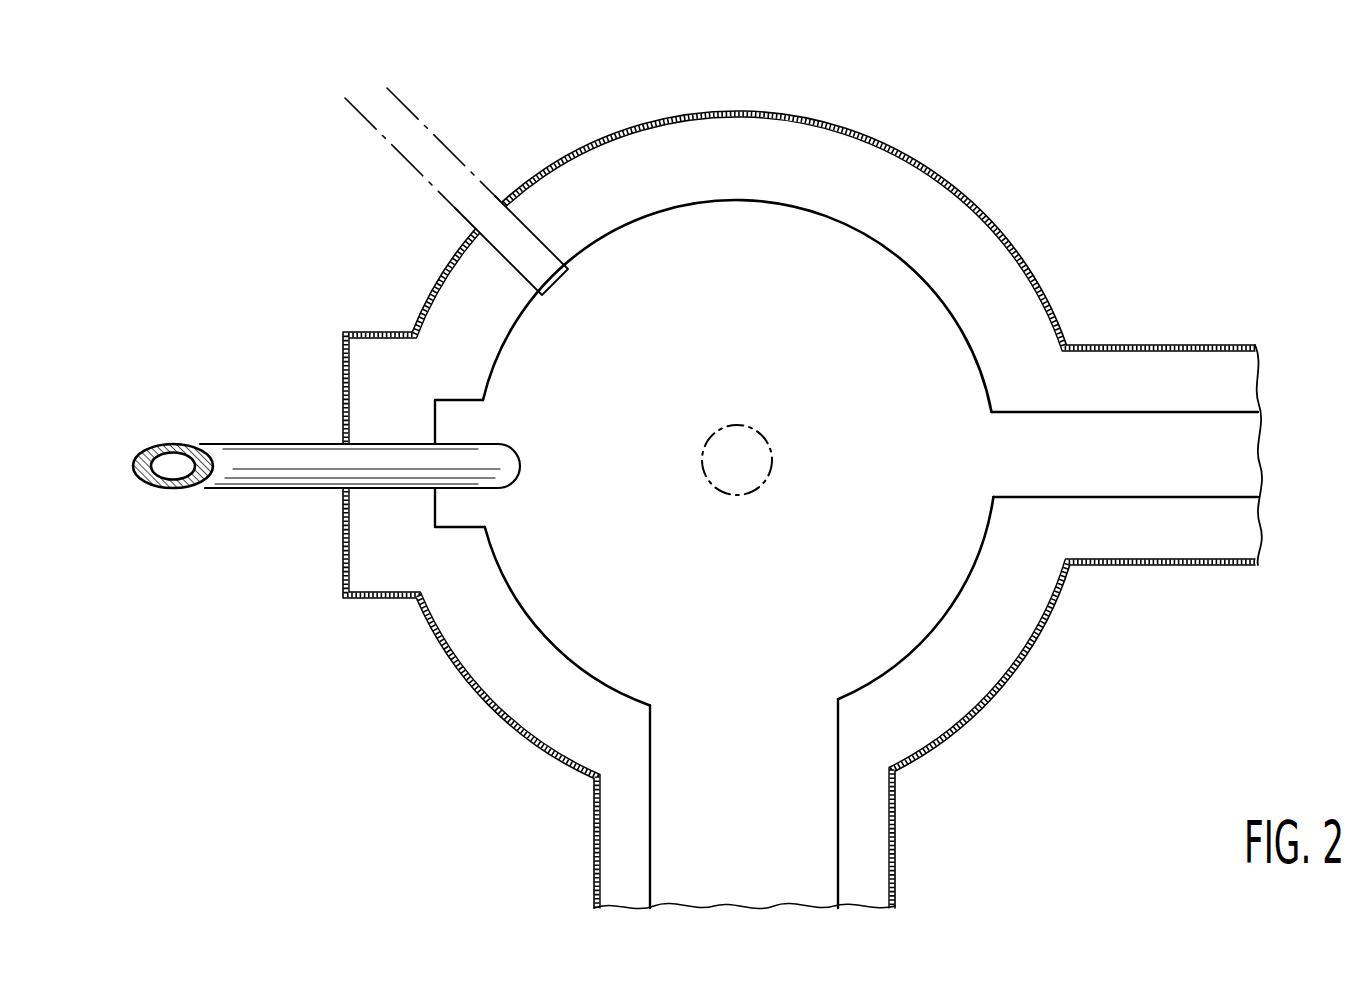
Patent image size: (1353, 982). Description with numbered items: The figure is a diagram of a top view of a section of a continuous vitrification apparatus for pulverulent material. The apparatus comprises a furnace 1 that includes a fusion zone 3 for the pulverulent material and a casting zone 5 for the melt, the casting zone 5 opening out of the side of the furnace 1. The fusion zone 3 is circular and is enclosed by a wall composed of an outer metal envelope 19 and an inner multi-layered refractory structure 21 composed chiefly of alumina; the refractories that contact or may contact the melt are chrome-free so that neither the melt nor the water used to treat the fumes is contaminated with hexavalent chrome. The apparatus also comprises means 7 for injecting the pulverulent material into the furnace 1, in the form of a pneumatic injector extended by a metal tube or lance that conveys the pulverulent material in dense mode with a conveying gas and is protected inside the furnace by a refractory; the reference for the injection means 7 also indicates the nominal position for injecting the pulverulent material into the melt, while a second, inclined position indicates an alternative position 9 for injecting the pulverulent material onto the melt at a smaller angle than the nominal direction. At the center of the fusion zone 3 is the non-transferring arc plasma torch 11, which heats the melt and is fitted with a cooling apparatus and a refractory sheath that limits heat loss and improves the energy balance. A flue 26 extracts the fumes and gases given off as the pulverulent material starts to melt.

The furnace 1 is at (843, 104).
The fusion zone 3 is at (905, 332).
The casting zone 5 is at (1206, 445).
The means for injecting the pulverulent material 7 is at (203, 443).
The alternative position for injecting pulverulent material 9 is at (413, 115).
The non-transferring arc plasma torch 11 is at (731, 428).
The outer metal envelope 19 is at (428, 638).
The inner multi-layered refractory structure 21 is at (500, 677).
The flue 26 is at (693, 857).